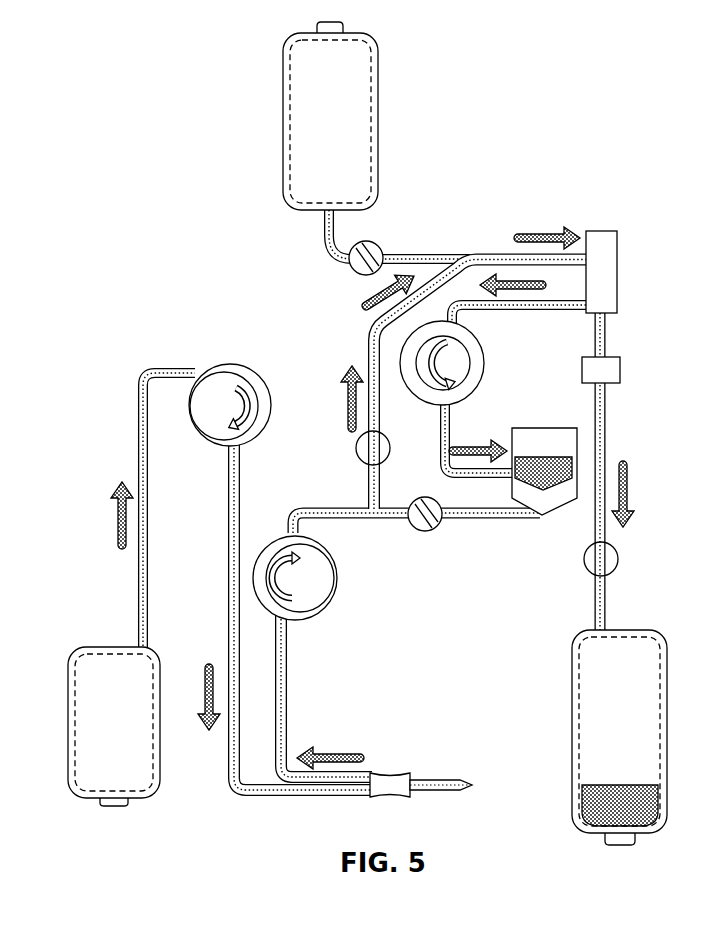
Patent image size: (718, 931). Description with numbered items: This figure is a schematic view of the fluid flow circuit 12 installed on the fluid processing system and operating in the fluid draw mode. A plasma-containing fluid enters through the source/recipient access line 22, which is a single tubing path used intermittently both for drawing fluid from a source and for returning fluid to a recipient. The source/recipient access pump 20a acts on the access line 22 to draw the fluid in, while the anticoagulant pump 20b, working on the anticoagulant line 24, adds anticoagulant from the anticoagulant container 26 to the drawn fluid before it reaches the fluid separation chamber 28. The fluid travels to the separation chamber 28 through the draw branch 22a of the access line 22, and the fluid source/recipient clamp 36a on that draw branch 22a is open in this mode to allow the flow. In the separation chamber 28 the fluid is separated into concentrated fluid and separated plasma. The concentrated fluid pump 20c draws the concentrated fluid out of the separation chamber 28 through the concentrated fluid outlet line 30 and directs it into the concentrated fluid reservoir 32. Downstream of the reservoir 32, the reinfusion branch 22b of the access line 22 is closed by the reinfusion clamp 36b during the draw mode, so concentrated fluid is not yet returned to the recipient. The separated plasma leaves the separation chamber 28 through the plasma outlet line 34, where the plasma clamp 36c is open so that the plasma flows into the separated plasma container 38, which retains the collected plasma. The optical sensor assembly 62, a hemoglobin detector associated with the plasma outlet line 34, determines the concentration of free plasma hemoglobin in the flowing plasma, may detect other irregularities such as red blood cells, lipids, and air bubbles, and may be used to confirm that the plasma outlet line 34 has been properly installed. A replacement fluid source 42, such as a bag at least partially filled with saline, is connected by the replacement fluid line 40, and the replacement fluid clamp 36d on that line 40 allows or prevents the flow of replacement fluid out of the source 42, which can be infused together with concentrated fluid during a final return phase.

The fluid flow circuit 12 is at (243, 242).
The source/recipient access pump 20a is at (316, 581).
The anticoagulant pump 20b is at (231, 364).
The concentrated fluid pump 20c is at (488, 365).
The source/recipient access line 22 is at (289, 687).
The draw branch 22a is at (369, 333).
The reinfusion branch 22b is at (485, 521).
The anticoagulant line 24 is at (137, 405).
The anticoagulant container 26 is at (131, 732).
The fluid separation chamber 28 is at (619, 275).
The concentrated fluid outlet line 30 is at (452, 420).
The concentrated fluid reservoir 32 is at (582, 452).
The plasma outlet line 34 is at (607, 595).
The fluid source/recipient clamp 36a is at (355, 448).
The reinfusion clamp 36b is at (438, 531).
The plasma clamp 36c is at (582, 567).
The replacement fluid clamp 36d is at (381, 244).
The separated plasma container 38 is at (633, 717).
The replacement fluid line 40 is at (322, 242).
The replacement fluid source 42 is at (341, 126).
The optical sensor assembly 62 is at (621, 373).